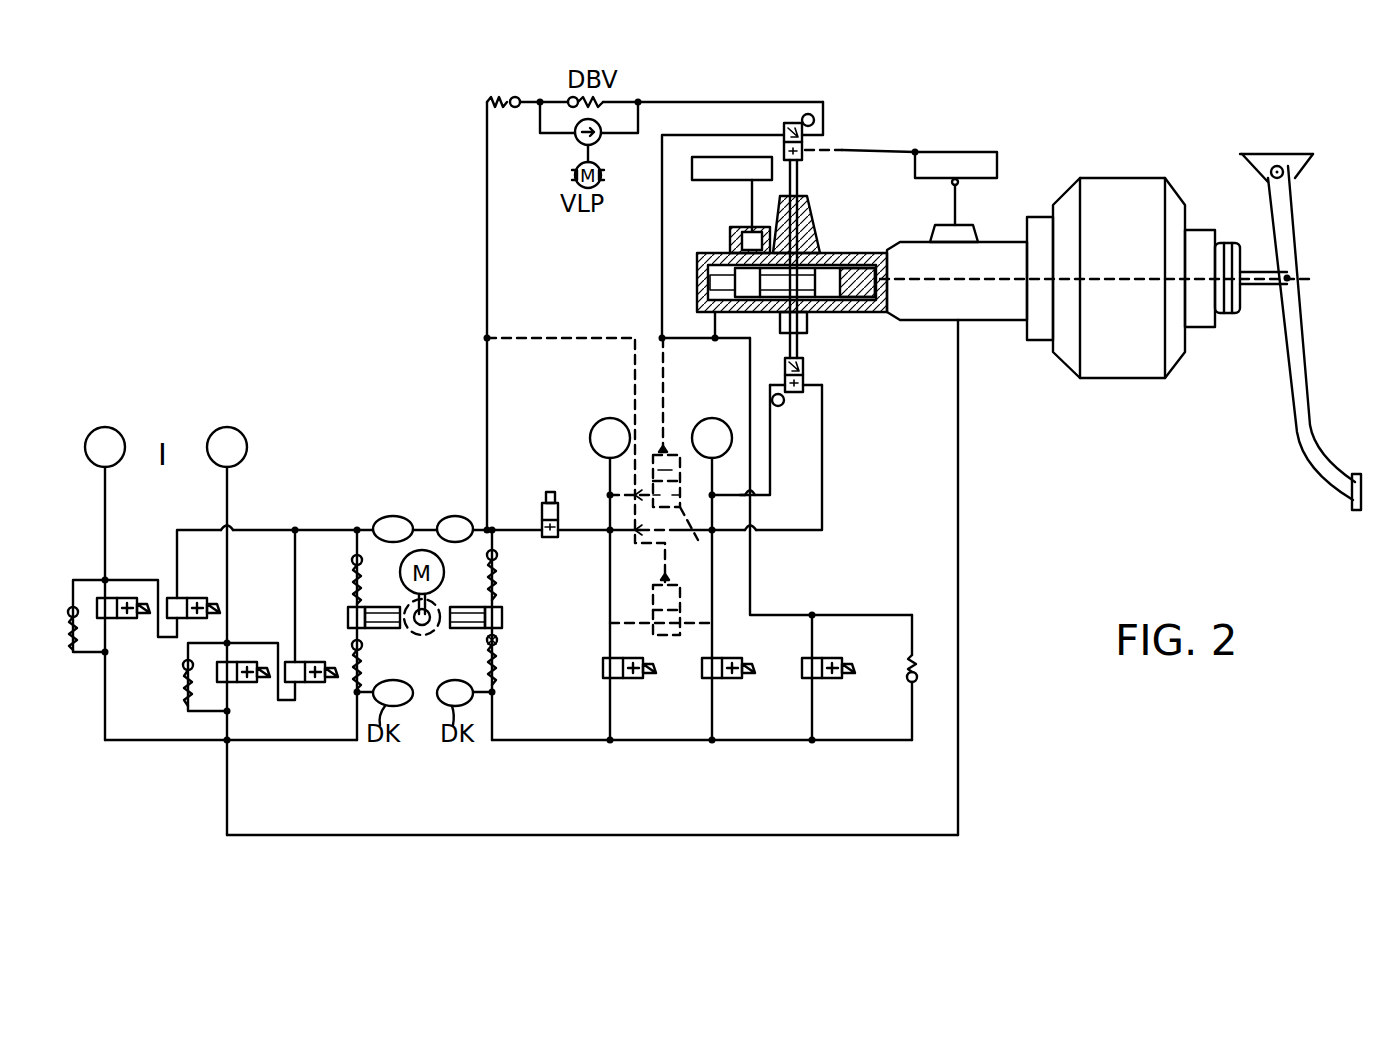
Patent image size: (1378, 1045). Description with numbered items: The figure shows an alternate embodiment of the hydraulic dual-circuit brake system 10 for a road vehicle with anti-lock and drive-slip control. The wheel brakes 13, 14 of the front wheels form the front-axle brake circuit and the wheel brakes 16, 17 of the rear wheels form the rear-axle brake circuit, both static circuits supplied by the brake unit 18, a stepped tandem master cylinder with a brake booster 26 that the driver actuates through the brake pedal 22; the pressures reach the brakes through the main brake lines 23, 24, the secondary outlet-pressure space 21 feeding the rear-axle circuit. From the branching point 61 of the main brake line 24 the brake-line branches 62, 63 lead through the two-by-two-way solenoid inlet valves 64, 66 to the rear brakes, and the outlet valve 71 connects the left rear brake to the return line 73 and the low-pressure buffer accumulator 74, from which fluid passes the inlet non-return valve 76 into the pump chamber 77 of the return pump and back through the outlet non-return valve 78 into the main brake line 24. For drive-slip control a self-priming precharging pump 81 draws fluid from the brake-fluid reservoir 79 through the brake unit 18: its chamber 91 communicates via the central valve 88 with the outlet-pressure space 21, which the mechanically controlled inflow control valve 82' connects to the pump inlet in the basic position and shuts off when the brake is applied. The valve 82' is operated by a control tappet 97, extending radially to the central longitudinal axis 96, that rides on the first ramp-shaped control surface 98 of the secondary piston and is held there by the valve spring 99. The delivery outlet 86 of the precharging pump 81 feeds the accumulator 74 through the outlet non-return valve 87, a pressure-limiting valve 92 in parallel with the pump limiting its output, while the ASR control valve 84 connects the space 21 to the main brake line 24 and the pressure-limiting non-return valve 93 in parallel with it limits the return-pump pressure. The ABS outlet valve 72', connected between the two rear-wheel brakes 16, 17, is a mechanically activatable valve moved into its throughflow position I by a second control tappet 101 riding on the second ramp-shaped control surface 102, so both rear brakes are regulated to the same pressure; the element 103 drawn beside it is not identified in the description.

The hydraulic dual-circuit brake system 10 is at (1008, 411).
The wheel brake 13 is at (118, 428).
The wheel brake 14 is at (238, 428).
The wheel brake 16 is at (592, 426).
The wheel brake 17 is at (733, 440).
The brake unit 18 is at (1008, 324).
The secondary outlet-pressure space 21 is at (702, 294).
The brake pedal 22 is at (1296, 430).
The main brake line 23 is at (960, 566).
The main brake line 24 is at (752, 566).
The brake booster 26 is at (1152, 178).
The branching point 61 is at (713, 742).
The brake-line branch 62 is at (605, 702).
The brake-line branch 63 is at (708, 702).
The inlet valve 64 is at (616, 680).
The inlet valve 66 is at (718, 680).
The outlet valve 71 is at (559, 538).
The ABS outlet valve 72' is at (821, 376).
The return line 73 is at (514, 528).
The low-pressure buffer accumulator 74 is at (453, 517).
The inlet non-return valve 76 is at (497, 556).
The pump chamber 77 is at (504, 613).
The outlet non-return valve 78 is at (497, 644).
The brake-fluid reservoir 79 is at (917, 150).
The precharging pump 81 is at (602, 138).
The inflow control valve 82' is at (828, 138).
The ASR control valve 84 is at (816, 680).
The delivery outlet 86 is at (518, 100).
The outlet non-return valve 87 is at (515, 110).
The central valve 88 is at (742, 242).
The chamber 91 is at (700, 168).
The pressure-limiting valve 92 is at (572, 112).
The pressure-limiting non-return valve 93 is at (916, 672).
The central longitudinal axis 96 is at (924, 282).
The control tappet 97 is at (800, 190).
The first ramp-shaped control surface 98 is at (812, 250).
The valve spring 99 is at (790, 122).
The control tappet 101 is at (800, 344).
The second ramp-shaped control surface 102 is at (808, 312).
The valve position 103 is at (796, 404).